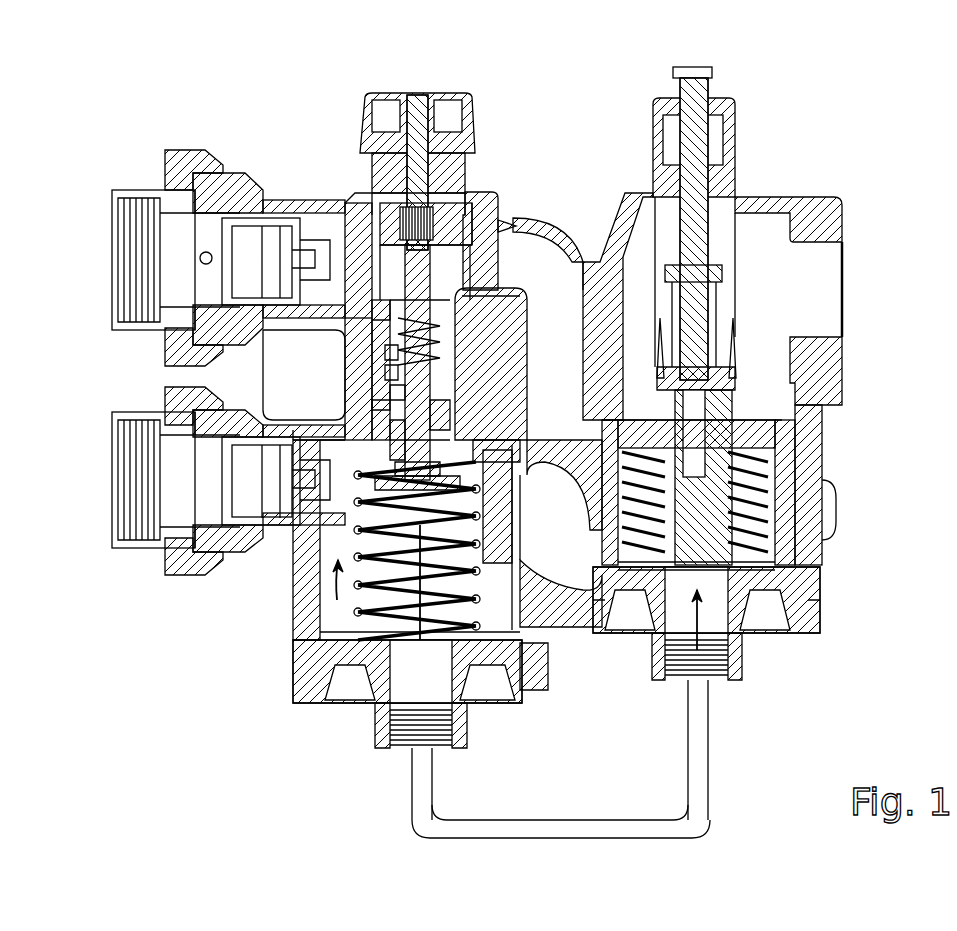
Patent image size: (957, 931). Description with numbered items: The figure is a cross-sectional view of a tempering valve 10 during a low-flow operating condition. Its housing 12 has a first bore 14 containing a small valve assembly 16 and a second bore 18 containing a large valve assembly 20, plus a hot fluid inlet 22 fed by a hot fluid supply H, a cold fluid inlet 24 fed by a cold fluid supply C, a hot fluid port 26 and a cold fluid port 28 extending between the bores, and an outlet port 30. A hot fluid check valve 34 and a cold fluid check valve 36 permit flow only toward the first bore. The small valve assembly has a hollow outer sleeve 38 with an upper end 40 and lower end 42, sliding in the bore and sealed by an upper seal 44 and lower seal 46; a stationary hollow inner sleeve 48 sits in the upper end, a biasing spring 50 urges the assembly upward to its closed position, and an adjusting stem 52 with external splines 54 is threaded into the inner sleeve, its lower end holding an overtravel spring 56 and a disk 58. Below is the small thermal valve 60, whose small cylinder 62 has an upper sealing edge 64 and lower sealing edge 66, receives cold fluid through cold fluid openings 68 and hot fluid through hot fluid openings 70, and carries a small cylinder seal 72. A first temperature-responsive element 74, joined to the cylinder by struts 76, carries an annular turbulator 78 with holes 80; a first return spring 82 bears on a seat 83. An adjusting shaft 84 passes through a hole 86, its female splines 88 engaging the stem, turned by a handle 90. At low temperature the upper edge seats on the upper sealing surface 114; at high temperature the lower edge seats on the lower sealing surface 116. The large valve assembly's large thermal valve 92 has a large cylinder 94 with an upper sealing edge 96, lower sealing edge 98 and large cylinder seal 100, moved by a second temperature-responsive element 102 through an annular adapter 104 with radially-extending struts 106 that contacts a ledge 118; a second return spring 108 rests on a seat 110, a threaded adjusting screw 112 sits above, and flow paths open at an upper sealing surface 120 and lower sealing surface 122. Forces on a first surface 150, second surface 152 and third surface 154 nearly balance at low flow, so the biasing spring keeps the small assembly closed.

The tempering valve 10 is at (585, 93).
The housing 12 is at (492, 258).
The first bore 14 is at (465, 218).
The small valve assembly 16 is at (303, 143).
The second bore 18 is at (643, 240).
The large valve assembly 20 is at (843, 420).
The hot fluid inlet 22 is at (100, 523).
The cold fluid inlet 24 is at (100, 305).
The hot fluid port 26 is at (558, 508).
The cold fluid port 28 is at (605, 245).
The outlet port 30 is at (840, 255).
The hot fluid check valve 34 is at (210, 495).
The cold fluid check valve 36 is at (245, 240).
The hollow outer sleeve 38 is at (358, 288).
The upper end 40 is at (512, 240).
The lower end 42 is at (300, 645).
The upper seal 44 is at (343, 342).
The lower seal 46 is at (322, 560).
The stationary hollow inner sleeve 48 is at (465, 200).
The biasing spring 50 is at (545, 665).
The adjusting stem 52 is at (517, 228).
The external splines 54 is at (375, 245).
The overtravel spring 56 is at (395, 348).
The disk 58 is at (385, 368).
The small thermal valve 60 is at (462, 440).
The small cylinder 62 is at (390, 390).
The upper sealing edge 64 is at (445, 330).
The lower sealing edge 66 is at (385, 405).
The cold fluid openings 68 is at (350, 322).
The hot fluid openings 70 is at (505, 395).
The small cylinder seal 72 is at (455, 355).
The first temperature-responsive element 74 is at (400, 438).
The struts 76 is at (460, 375).
The annular turbulator 78 is at (520, 455).
The holes 80 is at (395, 475).
The first return spring 82 is at (500, 528).
The seat 83 is at (380, 490).
The adjusting shaft 84 is at (445, 98).
The hole 86 is at (432, 133).
The female splines 88 is at (480, 235).
The handle 90 is at (447, 95).
The large thermal valve 92 is at (748, 312).
The large cylinder 94 is at (795, 465).
The upper sealing edge 96 is at (795, 440).
The lower sealing edge 98 is at (785, 575).
The large cylinder seal 100 is at (836, 505).
The second temperature-responsive element 102 is at (710, 262).
The annular adapter 104 is at (735, 360).
The radially-extending struts 106 is at (740, 415).
The second return spring 108 is at (800, 540).
The seat 110 is at (755, 630).
The threaded adjusting screw 112 is at (697, 68).
The upper sealing surface 114 is at (518, 300).
The lower sealing surface 116 is at (470, 415).
The ledge 118 is at (805, 488).
The upper sealing surface 120 is at (800, 395).
The lower sealing surface 122 is at (808, 580).
The first surface 150 is at (348, 300).
The second surface 152 is at (288, 438).
The third surface 154 is at (318, 600).
The cold fluid supply C is at (112, 258).
The hot fluid supply H is at (112, 480).